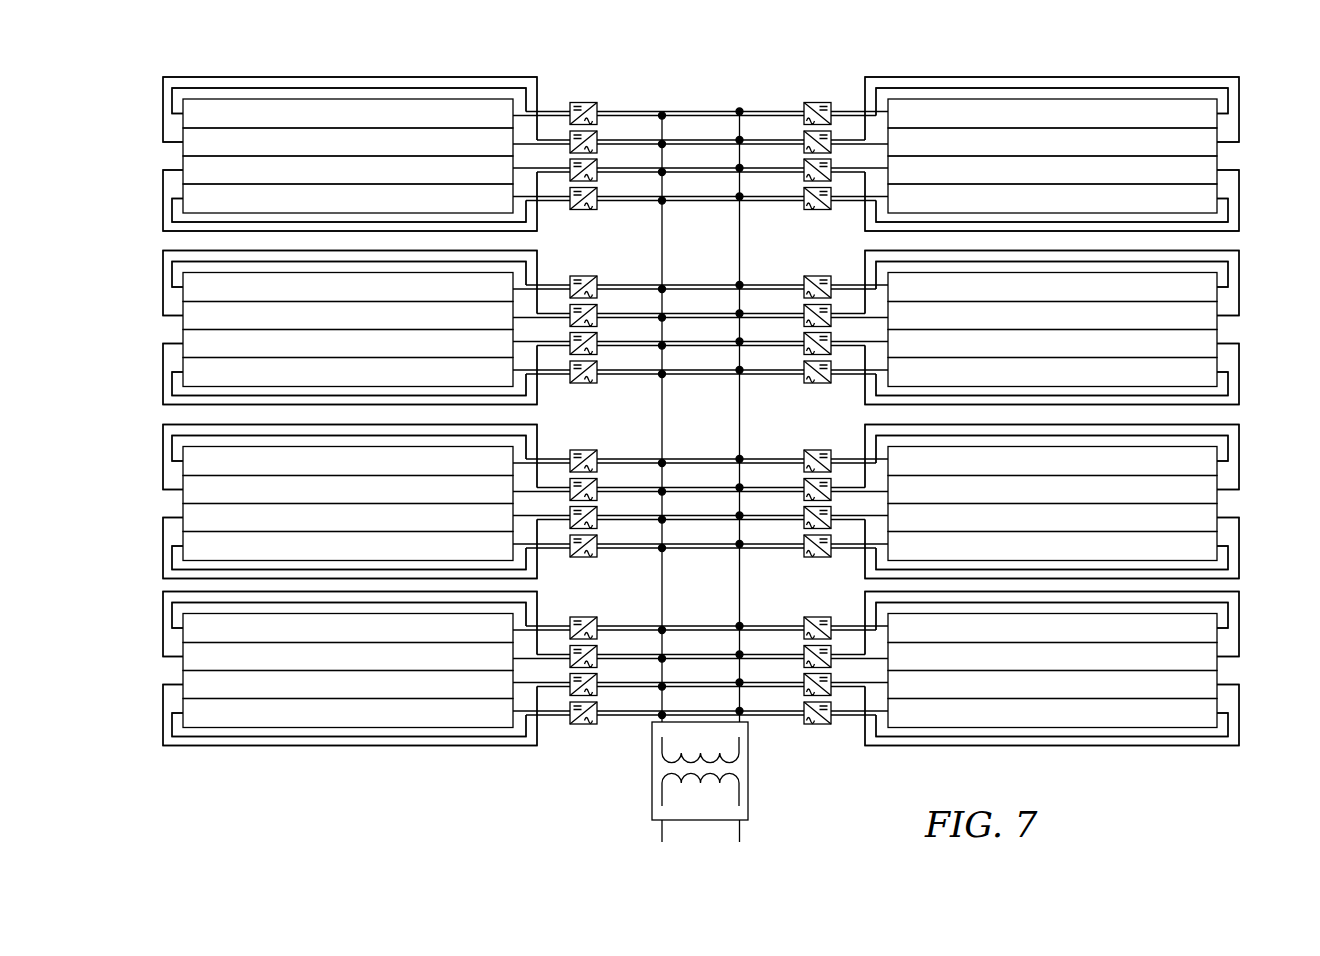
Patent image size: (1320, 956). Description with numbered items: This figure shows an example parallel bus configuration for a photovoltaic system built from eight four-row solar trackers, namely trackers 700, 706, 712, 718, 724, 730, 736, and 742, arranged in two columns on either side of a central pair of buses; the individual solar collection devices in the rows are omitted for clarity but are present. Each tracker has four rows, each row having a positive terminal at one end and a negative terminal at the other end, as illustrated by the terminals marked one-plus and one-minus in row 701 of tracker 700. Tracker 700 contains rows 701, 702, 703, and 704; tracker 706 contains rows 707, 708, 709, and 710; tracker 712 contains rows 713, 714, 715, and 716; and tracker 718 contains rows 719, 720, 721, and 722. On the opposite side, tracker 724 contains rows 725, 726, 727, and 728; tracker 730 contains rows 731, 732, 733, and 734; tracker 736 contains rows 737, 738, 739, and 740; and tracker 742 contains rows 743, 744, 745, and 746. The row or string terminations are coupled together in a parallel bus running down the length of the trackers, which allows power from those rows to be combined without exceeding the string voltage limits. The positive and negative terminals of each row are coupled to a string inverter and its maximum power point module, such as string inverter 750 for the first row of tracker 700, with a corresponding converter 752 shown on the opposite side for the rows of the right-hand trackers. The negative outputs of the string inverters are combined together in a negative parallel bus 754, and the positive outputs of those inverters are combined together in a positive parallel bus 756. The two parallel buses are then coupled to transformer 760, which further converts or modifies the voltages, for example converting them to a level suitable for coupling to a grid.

The tracker 700 is at (148, 92).
The tracker 706 is at (148, 266).
The tracker 712 is at (148, 443).
The tracker 718 is at (148, 613).
The tracker 724 is at (1248, 97).
The tracker 730 is at (1248, 283).
The tracker 736 is at (1248, 536).
The tracker 742 is at (1248, 637).
The row 701 is at (348, 113).
The row 702 is at (348, 142).
The row 703 is at (348, 170).
The row 704 is at (348, 198).
The row 707 is at (348, 287).
The row 708 is at (348, 316).
The row 709 is at (348, 344).
The row 710 is at (348, 372).
The row 713 is at (348, 461).
The row 714 is at (348, 490).
The row 715 is at (348, 518).
The row 716 is at (348, 546).
The row 719 is at (348, 628).
The row 720 is at (348, 657).
The row 721 is at (348, 685).
The row 722 is at (348, 713).
The row 725 is at (1052, 113).
The row 726 is at (1052, 142).
The row 727 is at (1052, 170).
The row 728 is at (1052, 198).
The row 731 is at (1052, 287).
The row 732 is at (1052, 316).
The row 733 is at (1052, 344).
The row 734 is at (1052, 372).
The row 737 is at (1052, 461).
The row 738 is at (1052, 490).
The row 739 is at (1052, 518).
The row 740 is at (1052, 546).
The row 743 is at (1052, 628).
The row 744 is at (1052, 657).
The row 745 is at (1052, 685).
The row 746 is at (1052, 713).
The string inverter 750 is at (583, 101).
The AC/DC converter 752 is at (816, 101).
The negative parallel bus 754 is at (655, 236).
The positive parallel bus 756 is at (748, 236).
The transformer 760 is at (748, 776).